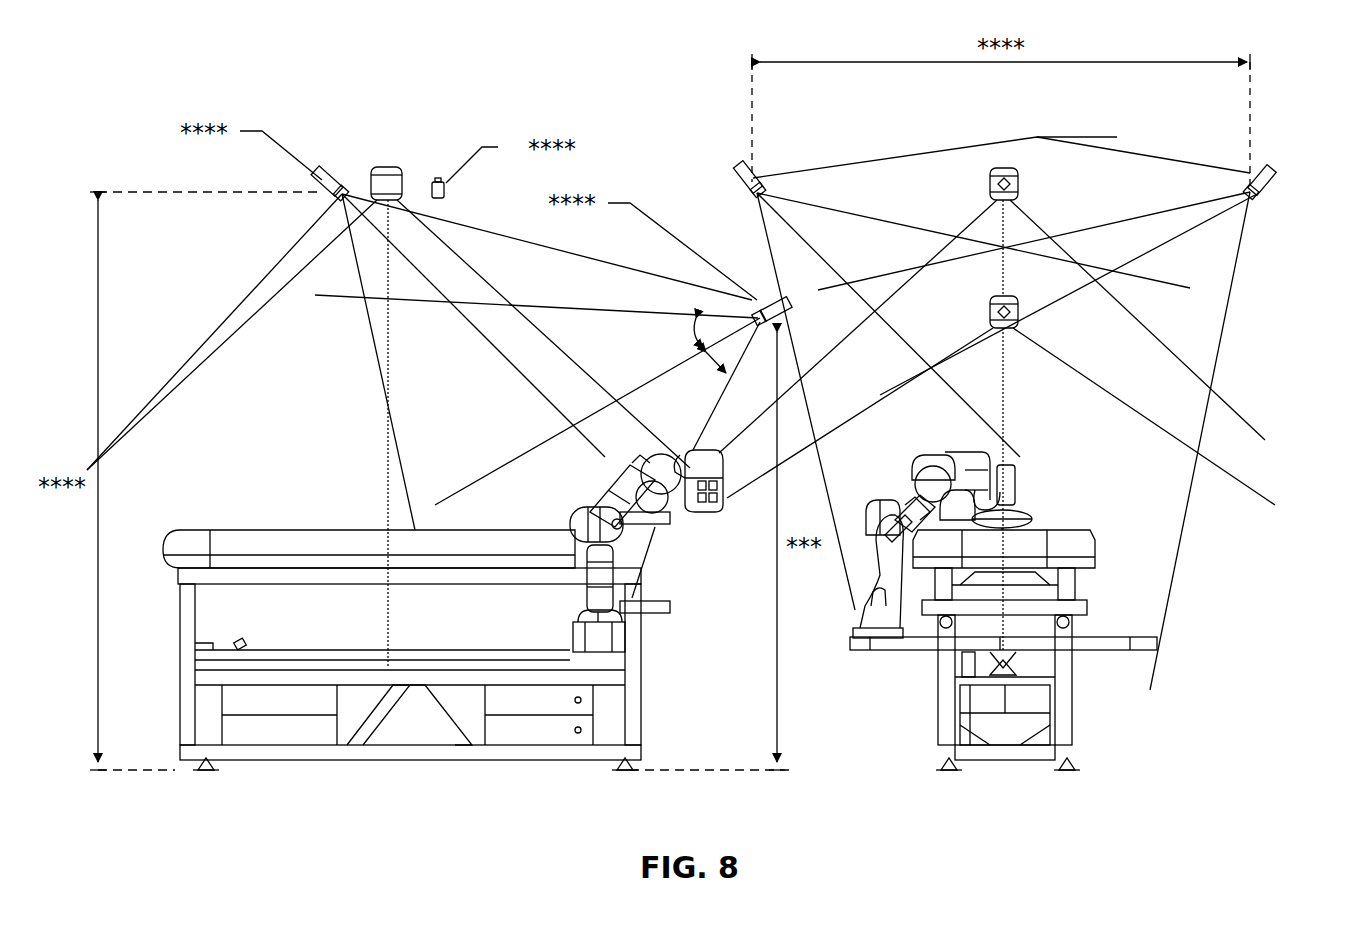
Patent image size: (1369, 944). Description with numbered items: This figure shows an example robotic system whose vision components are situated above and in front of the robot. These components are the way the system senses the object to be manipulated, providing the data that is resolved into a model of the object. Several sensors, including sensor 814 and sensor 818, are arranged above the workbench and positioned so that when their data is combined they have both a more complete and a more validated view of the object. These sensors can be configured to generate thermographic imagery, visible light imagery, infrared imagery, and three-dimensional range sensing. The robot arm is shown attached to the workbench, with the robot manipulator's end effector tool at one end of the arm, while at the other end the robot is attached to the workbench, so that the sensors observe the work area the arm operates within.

The sensor 814 is at (1272, 172).
The sensor 818 is at (437, 180).